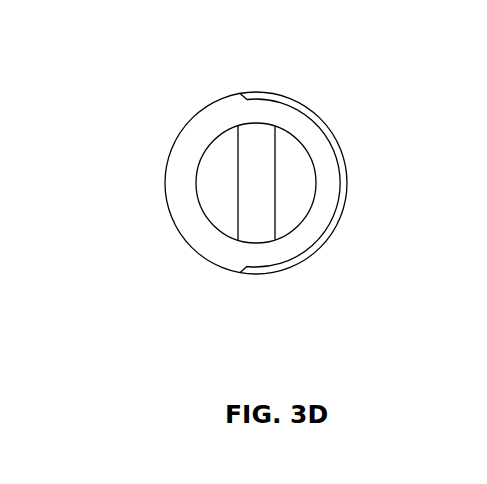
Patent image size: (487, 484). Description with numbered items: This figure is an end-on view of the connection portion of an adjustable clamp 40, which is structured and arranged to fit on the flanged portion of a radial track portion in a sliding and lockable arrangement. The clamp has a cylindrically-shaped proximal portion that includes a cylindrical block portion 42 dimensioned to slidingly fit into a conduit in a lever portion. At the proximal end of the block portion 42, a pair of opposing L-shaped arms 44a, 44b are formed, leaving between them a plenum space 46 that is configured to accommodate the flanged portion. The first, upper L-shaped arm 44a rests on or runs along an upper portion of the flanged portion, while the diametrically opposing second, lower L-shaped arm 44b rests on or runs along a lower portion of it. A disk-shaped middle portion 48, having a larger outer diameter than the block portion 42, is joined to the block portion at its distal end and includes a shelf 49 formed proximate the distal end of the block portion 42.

The adjustable clamp 40 is at (374, 56).
The block portion 42 is at (278, 243).
The first L-shaped arm 44a is at (218, 182).
The second L-shaped arm 44b is at (300, 183).
The plenum space 46 is at (250, 197).
The middle portion 48 is at (333, 127).
The shelf 49 is at (327, 235).